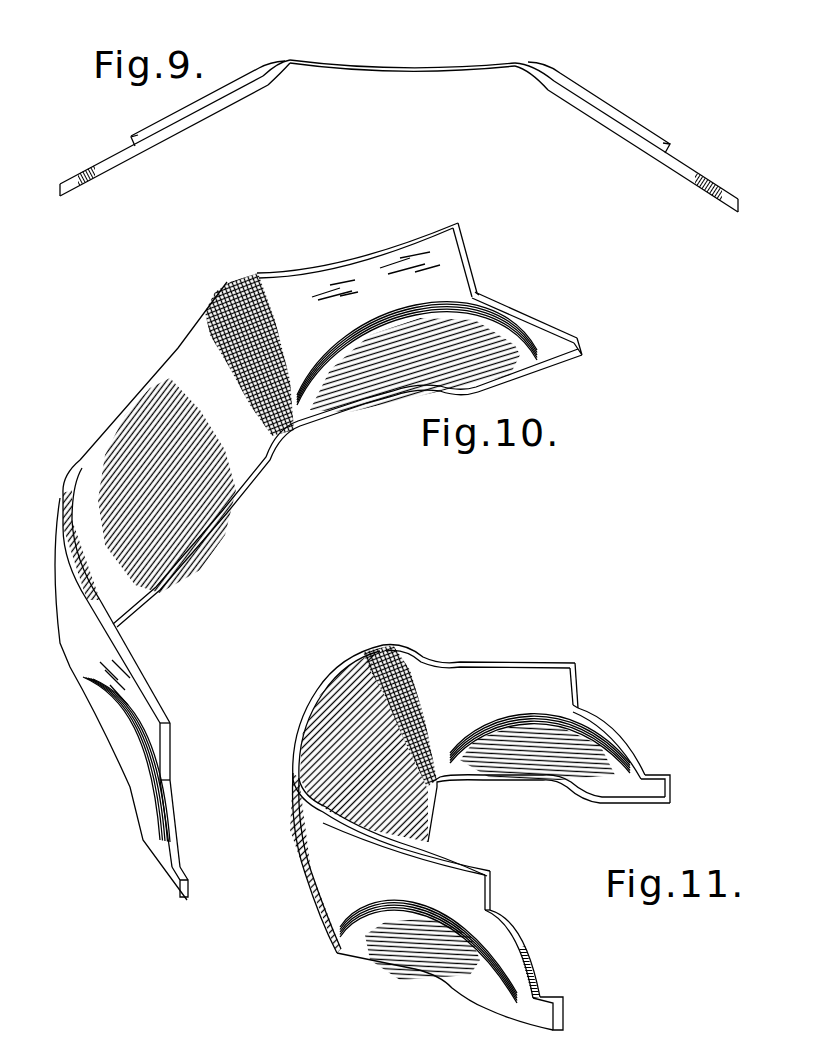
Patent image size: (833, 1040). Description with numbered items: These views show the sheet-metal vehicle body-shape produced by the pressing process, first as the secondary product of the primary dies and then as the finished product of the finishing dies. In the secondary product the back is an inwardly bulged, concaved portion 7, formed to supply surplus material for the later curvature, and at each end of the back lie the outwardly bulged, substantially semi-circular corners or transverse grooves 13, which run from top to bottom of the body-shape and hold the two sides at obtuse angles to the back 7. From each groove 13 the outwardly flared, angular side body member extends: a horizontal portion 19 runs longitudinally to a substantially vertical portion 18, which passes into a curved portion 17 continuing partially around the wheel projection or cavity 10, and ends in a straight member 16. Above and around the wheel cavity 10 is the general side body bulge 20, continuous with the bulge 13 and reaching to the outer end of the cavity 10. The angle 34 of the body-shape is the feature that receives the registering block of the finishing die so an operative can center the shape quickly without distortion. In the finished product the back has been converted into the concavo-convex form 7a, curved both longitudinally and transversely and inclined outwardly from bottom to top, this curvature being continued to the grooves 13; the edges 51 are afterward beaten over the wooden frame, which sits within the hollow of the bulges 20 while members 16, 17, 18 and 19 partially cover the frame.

In FIG. 9, the inwardly bulged portion 7 is at (433, 75).
In FIG. 10, the inwardly bulged portion 7 is at (147, 428).
In FIG. 11, the concavo-convex form 7a is at (320, 723).
In FIG. 10, the wheel projections 10 is at (399, 367).
In FIG. 11, the wheel projections 10 is at (523, 743).
In FIG. 9, the outwardly bulged semi-circular corners 13 is at (292, 36).
In FIG. 10, the outwardly bulged semi-circular corners 13 is at (226, 282).
In FIG. 11, the outwardly bulged semi-circular corners 13 is at (385, 645).
In FIG. 9, the straight members 16 is at (63, 197).
In FIG. 10, the straight members 16 is at (583, 343).
In FIG. 11, the straight members 16 is at (660, 773).
In FIG. 9, the curved portions 17 is at (112, 162).
In FIG. 10, the curved portions 17 is at (525, 306).
In FIG. 11, the curved portions 17 is at (618, 723).
In FIG. 9, the substantially vertical portions 18 is at (133, 148).
In FIG. 10, the substantially vertical portions 18 is at (466, 256).
In FIG. 11, the substantially vertical portions 18 is at (578, 682).
In FIG. 9, the horizontal portions 19 is at (187, 118).
In FIG. 10, the horizontal portions 19 is at (368, 256).
In FIG. 11, the horizontal portions 19 is at (462, 661).
In FIG. 10, the side body bulges 20 is at (58, 653).
In FIG. 11, the side body bulges 20 is at (445, 853).
In FIG. 10, the angle 34 is at (483, 290).
In FIG. 11, the angle 34 is at (584, 708).
In FIG. 11, the edges 51 is at (308, 703).